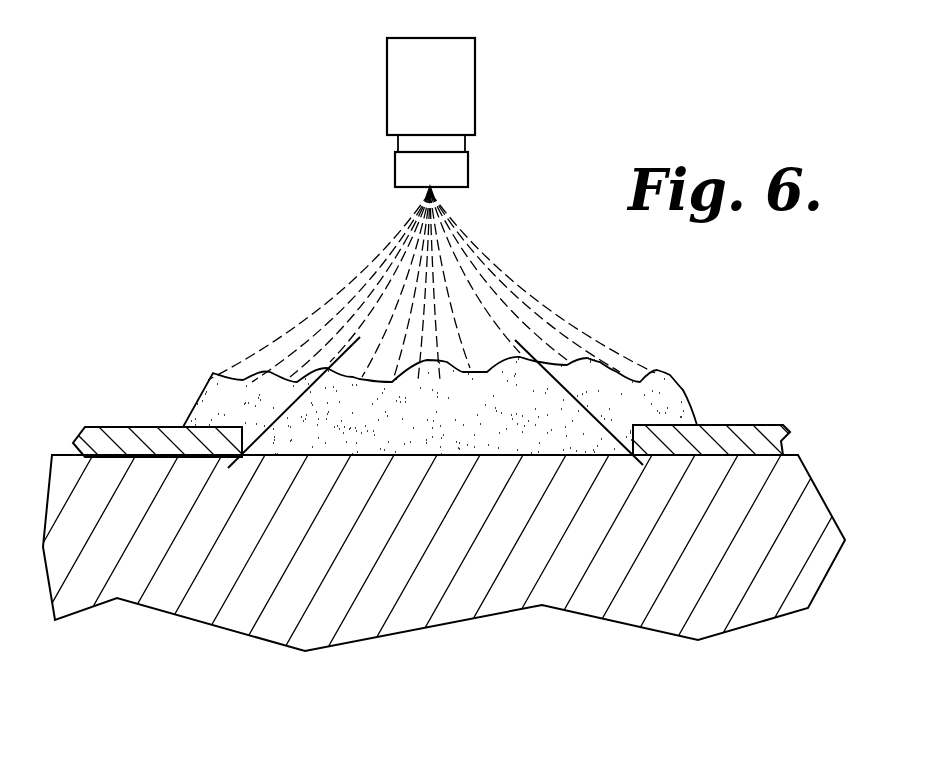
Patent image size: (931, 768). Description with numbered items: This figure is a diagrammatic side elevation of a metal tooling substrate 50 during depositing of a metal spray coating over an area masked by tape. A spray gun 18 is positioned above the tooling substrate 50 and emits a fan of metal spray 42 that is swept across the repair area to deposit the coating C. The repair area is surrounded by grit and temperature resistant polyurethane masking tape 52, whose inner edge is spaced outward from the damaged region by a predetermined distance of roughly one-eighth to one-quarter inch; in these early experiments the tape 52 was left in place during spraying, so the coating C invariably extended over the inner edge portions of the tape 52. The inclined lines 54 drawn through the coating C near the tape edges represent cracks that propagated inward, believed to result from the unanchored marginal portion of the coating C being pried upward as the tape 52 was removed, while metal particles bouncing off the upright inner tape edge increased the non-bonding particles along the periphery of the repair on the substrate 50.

The spray gun 18 is at (475, 88).
The metal spray 42 is at (387, 252).
The substrate 50 is at (820, 507).
The masking tape 52 is at (155, 437).
The lines 54 is at (280, 412).
The coating C is at (667, 400).